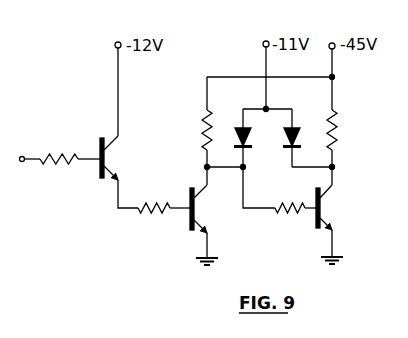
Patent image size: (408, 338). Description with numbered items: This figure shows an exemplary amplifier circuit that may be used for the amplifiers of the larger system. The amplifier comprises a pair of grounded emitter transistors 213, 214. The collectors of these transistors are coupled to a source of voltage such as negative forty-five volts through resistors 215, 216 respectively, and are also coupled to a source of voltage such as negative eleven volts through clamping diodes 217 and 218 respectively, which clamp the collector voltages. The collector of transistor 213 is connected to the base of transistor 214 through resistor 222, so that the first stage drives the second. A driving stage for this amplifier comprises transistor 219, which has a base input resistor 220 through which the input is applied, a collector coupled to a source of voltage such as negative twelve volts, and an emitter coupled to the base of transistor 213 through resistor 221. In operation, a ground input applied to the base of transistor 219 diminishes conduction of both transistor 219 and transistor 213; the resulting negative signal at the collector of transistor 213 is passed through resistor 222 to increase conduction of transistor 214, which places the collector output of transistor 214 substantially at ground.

The grounded emitter transistor 213 is at (186, 213).
The grounded emitter transistor 214 is at (327, 201).
The resistor 215 is at (205, 134).
The resistor 216 is at (338, 125).
The clamping diode 217 is at (240, 126).
The clamping diode 218 is at (296, 126).
The transistor 219 is at (111, 160).
The base input resistor 220 is at (59, 147).
The resistor 221 is at (162, 209).
The resistor 222 is at (302, 212).